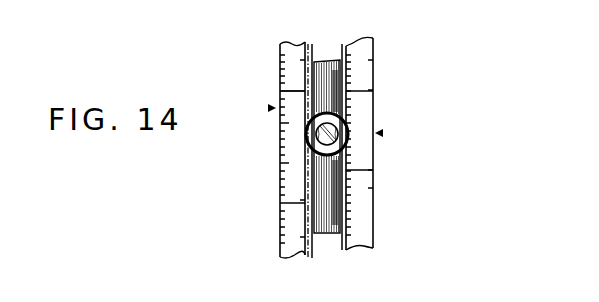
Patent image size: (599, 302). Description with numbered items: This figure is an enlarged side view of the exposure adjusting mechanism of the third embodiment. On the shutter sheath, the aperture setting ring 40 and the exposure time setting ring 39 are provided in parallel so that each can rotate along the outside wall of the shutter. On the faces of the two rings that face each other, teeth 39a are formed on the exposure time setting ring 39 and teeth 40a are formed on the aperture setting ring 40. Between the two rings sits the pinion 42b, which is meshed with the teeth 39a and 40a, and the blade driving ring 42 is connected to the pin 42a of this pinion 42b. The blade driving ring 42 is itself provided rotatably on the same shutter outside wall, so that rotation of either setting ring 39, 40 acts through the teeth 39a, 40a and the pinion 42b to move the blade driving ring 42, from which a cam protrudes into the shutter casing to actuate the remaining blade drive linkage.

The exposure time setting ring 39 is at (280, 60).
The teeth 39a is at (280, 91).
The aperture setting ring 40 is at (373, 60).
The teeth 40a is at (373, 90).
The blade driving ring 42 is at (343, 190).
The pin 42a is at (319, 61).
The pinion 42b is at (323, 234).